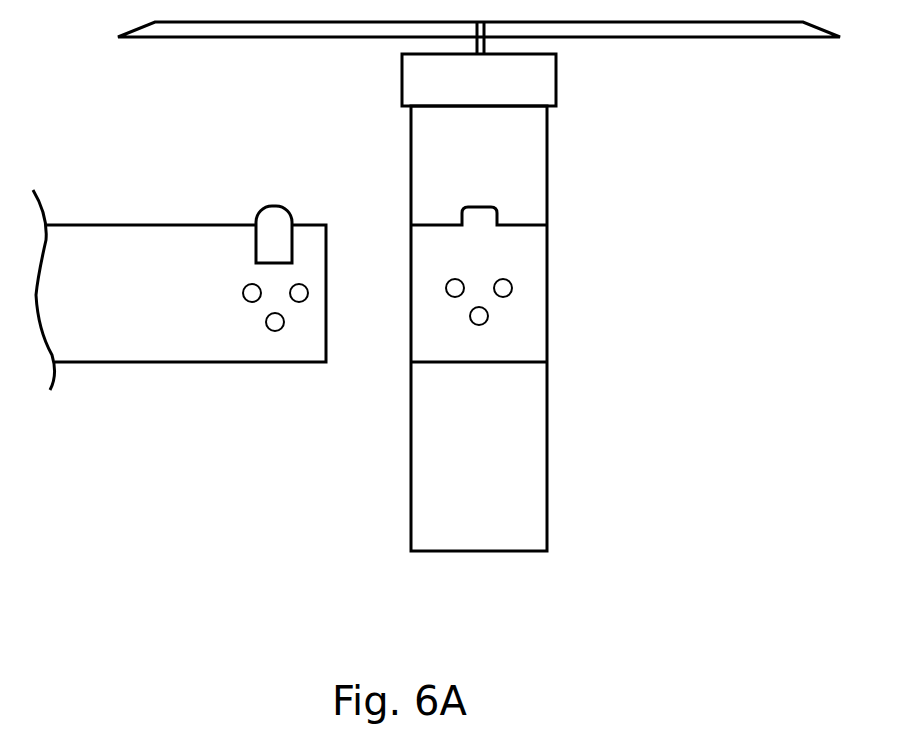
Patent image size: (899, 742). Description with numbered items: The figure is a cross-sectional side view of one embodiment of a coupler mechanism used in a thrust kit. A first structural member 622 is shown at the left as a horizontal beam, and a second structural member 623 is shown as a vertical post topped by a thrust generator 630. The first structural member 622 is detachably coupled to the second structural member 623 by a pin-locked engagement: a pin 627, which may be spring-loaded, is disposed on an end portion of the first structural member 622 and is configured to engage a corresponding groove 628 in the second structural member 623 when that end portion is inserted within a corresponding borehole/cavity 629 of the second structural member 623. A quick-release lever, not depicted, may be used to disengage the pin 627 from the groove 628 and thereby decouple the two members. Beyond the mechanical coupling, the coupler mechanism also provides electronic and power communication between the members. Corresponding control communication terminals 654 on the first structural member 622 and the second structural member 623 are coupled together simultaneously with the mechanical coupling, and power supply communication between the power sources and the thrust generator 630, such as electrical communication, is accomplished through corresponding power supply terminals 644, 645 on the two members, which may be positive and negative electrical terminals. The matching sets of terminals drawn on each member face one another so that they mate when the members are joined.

The thrust generator 630 is at (599, 70).
The second structural member 623 is at (530, 465).
The groove 628 is at (490, 208).
The borehole/cavity 629 is at (510, 362).
The first structural member 622 is at (135, 343).
The pin 627 is at (277, 225).
The power supply terminal 644 is at (252, 293).
The power supply terminal 645 is at (299, 293).
The control communication terminal 654 is at (275, 322).